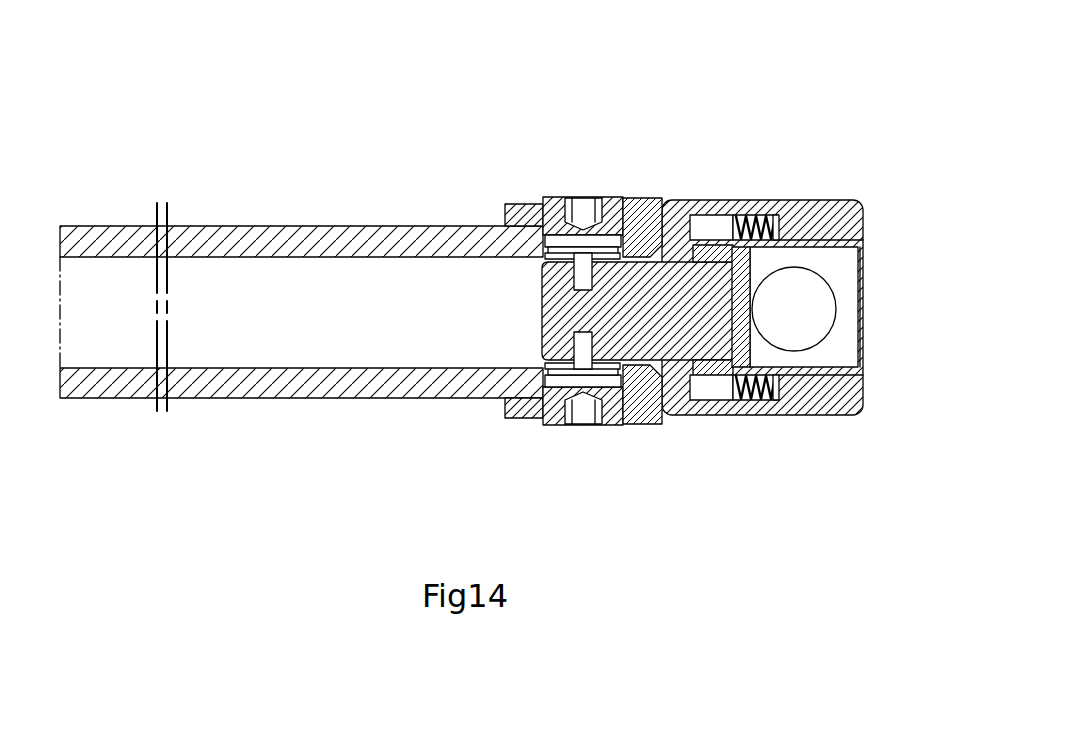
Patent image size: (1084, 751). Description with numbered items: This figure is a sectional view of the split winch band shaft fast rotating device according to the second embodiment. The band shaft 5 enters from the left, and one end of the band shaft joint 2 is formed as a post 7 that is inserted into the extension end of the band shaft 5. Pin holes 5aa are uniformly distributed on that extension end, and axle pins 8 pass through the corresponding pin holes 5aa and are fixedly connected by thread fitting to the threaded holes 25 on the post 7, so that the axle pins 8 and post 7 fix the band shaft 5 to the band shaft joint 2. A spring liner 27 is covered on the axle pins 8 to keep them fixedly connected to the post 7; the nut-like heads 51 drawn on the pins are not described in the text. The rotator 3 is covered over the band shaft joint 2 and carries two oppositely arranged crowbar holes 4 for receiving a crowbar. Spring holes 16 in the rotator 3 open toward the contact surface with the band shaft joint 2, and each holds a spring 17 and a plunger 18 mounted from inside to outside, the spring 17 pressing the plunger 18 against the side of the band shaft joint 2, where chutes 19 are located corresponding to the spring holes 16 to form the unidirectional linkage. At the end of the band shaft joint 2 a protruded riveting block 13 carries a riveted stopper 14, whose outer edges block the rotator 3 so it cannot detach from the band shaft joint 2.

The band shaft 5 is at (290, 226).
The pin holes 5aa is at (530, 204).
The spring liner 27 is at (543, 255).
The axle pins 8 is at (557, 200).
The nut 51 is at (625, 205).
The band shaft joint 2 is at (620, 205).
The chutes 19 is at (660, 212).
The plunger 18 is at (712, 205).
The spring 17 is at (745, 212).
The stopper 14 is at (765, 212).
The rotator 3 is at (836, 205).
The spring holes 16 is at (785, 233).
The crowbar holes 4 is at (822, 290).
The riveting block 13 is at (748, 300).
The post 7 is at (545, 312).
The threaded holes 25 is at (575, 285).